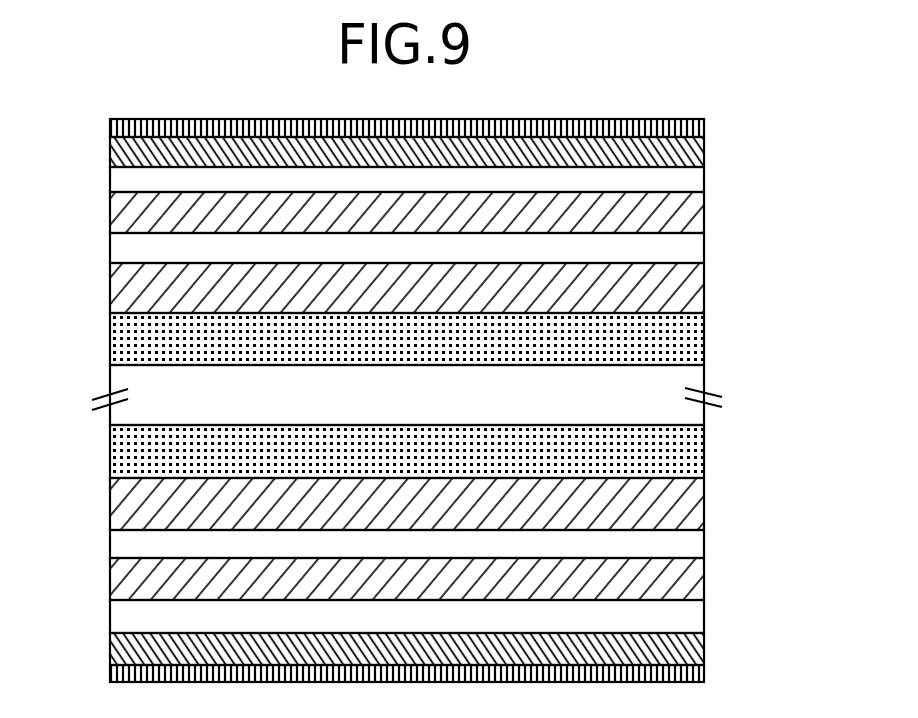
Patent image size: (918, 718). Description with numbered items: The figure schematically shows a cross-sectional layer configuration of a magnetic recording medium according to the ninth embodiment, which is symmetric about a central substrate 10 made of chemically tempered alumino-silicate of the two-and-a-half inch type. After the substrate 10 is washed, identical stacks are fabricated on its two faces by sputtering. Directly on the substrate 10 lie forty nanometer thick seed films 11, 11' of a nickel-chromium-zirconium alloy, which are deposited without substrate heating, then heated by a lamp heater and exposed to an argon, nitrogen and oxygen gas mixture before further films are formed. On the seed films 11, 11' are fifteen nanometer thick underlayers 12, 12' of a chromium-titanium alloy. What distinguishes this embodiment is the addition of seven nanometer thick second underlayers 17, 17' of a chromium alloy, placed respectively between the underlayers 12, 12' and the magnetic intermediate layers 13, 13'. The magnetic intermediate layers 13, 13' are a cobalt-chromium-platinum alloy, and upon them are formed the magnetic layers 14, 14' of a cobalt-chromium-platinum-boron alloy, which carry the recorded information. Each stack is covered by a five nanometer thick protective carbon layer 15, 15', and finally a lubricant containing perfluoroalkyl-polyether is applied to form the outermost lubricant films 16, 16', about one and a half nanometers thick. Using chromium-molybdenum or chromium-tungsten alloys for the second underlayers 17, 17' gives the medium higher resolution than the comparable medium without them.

The substrate 10 is at (700, 380).
The seed film 11 is at (361, 330).
The seed film 11' is at (357, 444).
The underlayer 12 is at (453, 275).
The underlayer 12' is at (457, 493).
The magnetic intermediate layer 13 is at (361, 205).
The magnetic intermediate layer 13' is at (357, 566).
The magnetic layer 14 is at (453, 162).
The magnetic layer 14' is at (457, 600).
The protective carbon layer 15 is at (361, 138).
The protective carbon layer 15' is at (357, 630).
The lubricant film 16 is at (453, 108).
The lubricant film 16' is at (457, 653).
The second underlayer 17 is at (500, 206).
The second underlayer 17' is at (504, 505).